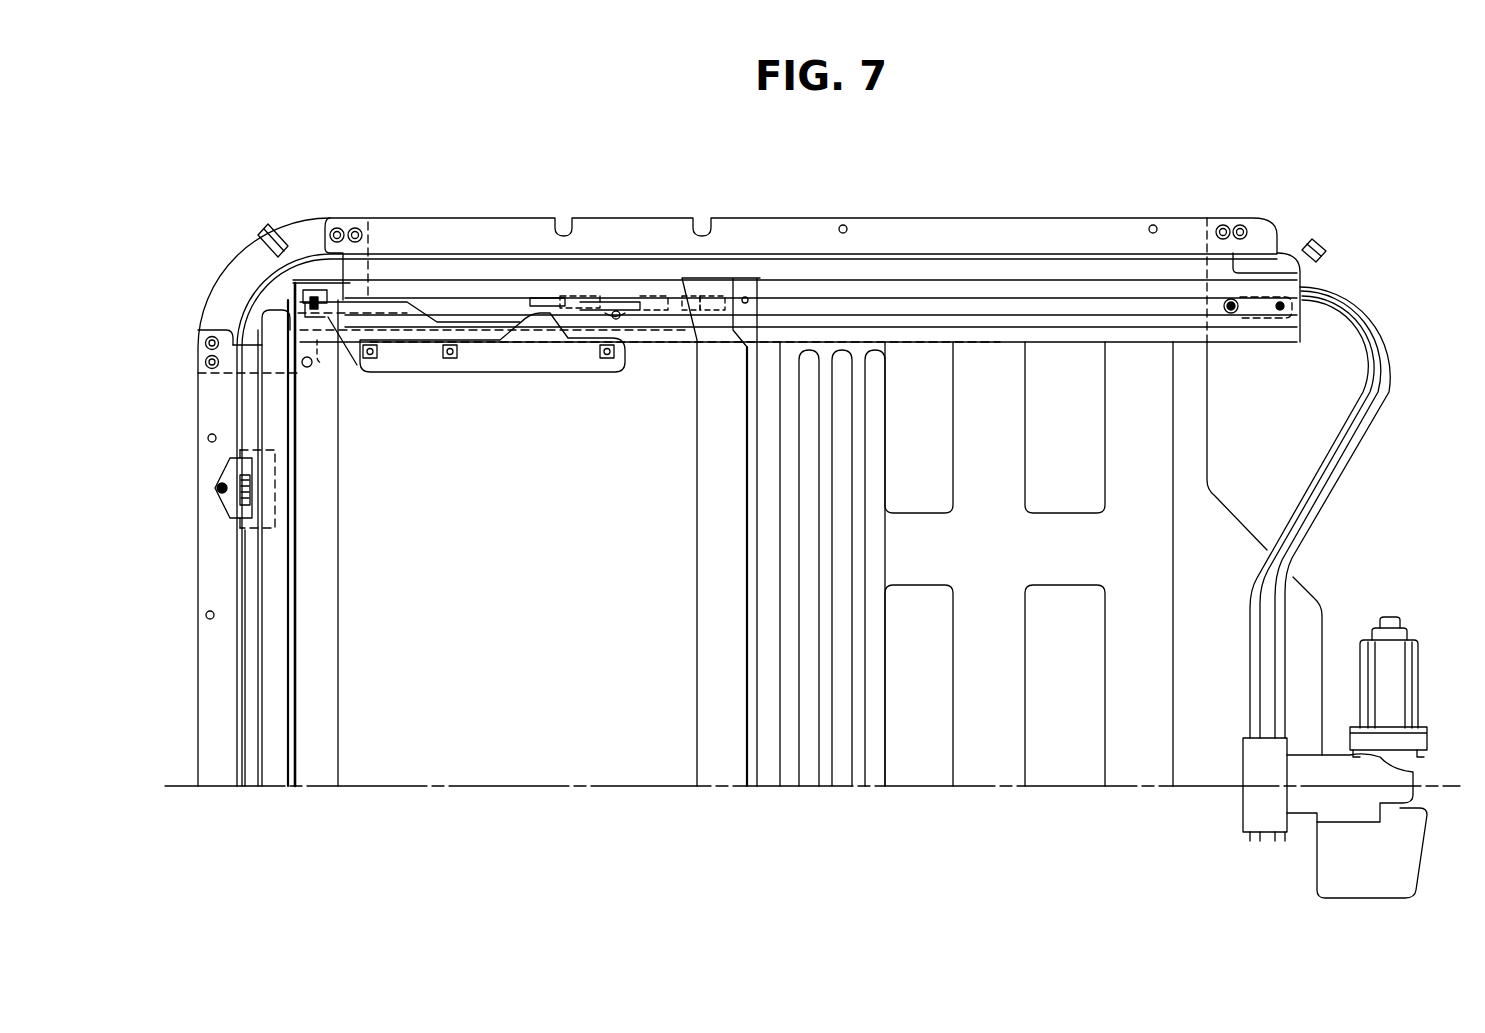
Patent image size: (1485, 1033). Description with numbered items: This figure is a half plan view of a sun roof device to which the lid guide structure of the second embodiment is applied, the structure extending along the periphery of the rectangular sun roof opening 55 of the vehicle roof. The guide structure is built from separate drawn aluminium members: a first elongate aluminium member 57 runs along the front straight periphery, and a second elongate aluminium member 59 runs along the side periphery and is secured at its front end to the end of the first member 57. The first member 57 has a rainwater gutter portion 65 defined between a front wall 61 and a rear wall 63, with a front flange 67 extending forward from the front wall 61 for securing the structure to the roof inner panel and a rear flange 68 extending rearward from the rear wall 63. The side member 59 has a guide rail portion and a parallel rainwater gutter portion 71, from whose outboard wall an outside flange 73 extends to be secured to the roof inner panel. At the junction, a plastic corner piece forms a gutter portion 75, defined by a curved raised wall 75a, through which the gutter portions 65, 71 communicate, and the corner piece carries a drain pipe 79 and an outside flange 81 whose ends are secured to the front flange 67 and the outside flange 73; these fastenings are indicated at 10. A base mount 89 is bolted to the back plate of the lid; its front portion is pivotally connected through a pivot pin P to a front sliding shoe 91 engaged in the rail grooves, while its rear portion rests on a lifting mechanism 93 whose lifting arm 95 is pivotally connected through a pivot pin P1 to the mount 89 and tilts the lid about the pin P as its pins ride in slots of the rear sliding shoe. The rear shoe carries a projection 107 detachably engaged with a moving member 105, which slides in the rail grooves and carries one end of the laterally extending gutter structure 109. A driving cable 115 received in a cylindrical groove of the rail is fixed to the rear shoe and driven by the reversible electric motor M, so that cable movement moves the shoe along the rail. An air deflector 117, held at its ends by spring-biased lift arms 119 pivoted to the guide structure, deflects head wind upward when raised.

The fixing screws 10 is at (204, 360).
The sun roof opening 55 is at (535, 628).
The first elongate aluminium member 57 is at (192, 600).
The second elongate aluminium member 59 is at (482, 212).
The front wall 61 is at (240, 432).
The rear wall 63 is at (297, 442).
The rainwater gutter portion 65 is at (250, 662).
The front flange 67 is at (208, 549).
The rear flange 68 is at (328, 650).
The rainwater gutter portion 71 is at (468, 270).
The outside flange 73 is at (892, 218).
The gutter portion 75 is at (277, 293).
The curved raised wall 75a is at (203, 346).
The drain pipe 79 is at (258, 236).
The outside flange 81 is at (228, 303).
The base mount 89 is at (490, 363).
The front sliding shoe 91 is at (300, 262).
The lifting mechanism 93 is at (624, 285).
The lifting arm 95 is at (590, 300).
The moving member 105 is at (742, 300).
The projection 107 is at (676, 300).
The gutter structure 109 is at (700, 482).
The driving cable 115 is at (1278, 637).
The air deflector 117 is at (265, 700).
The lift arm 119 is at (435, 302).
The pivot pin P is at (313, 290).
The pivot pin P1 is at (540, 300).
The electric motor M is at (1420, 712).